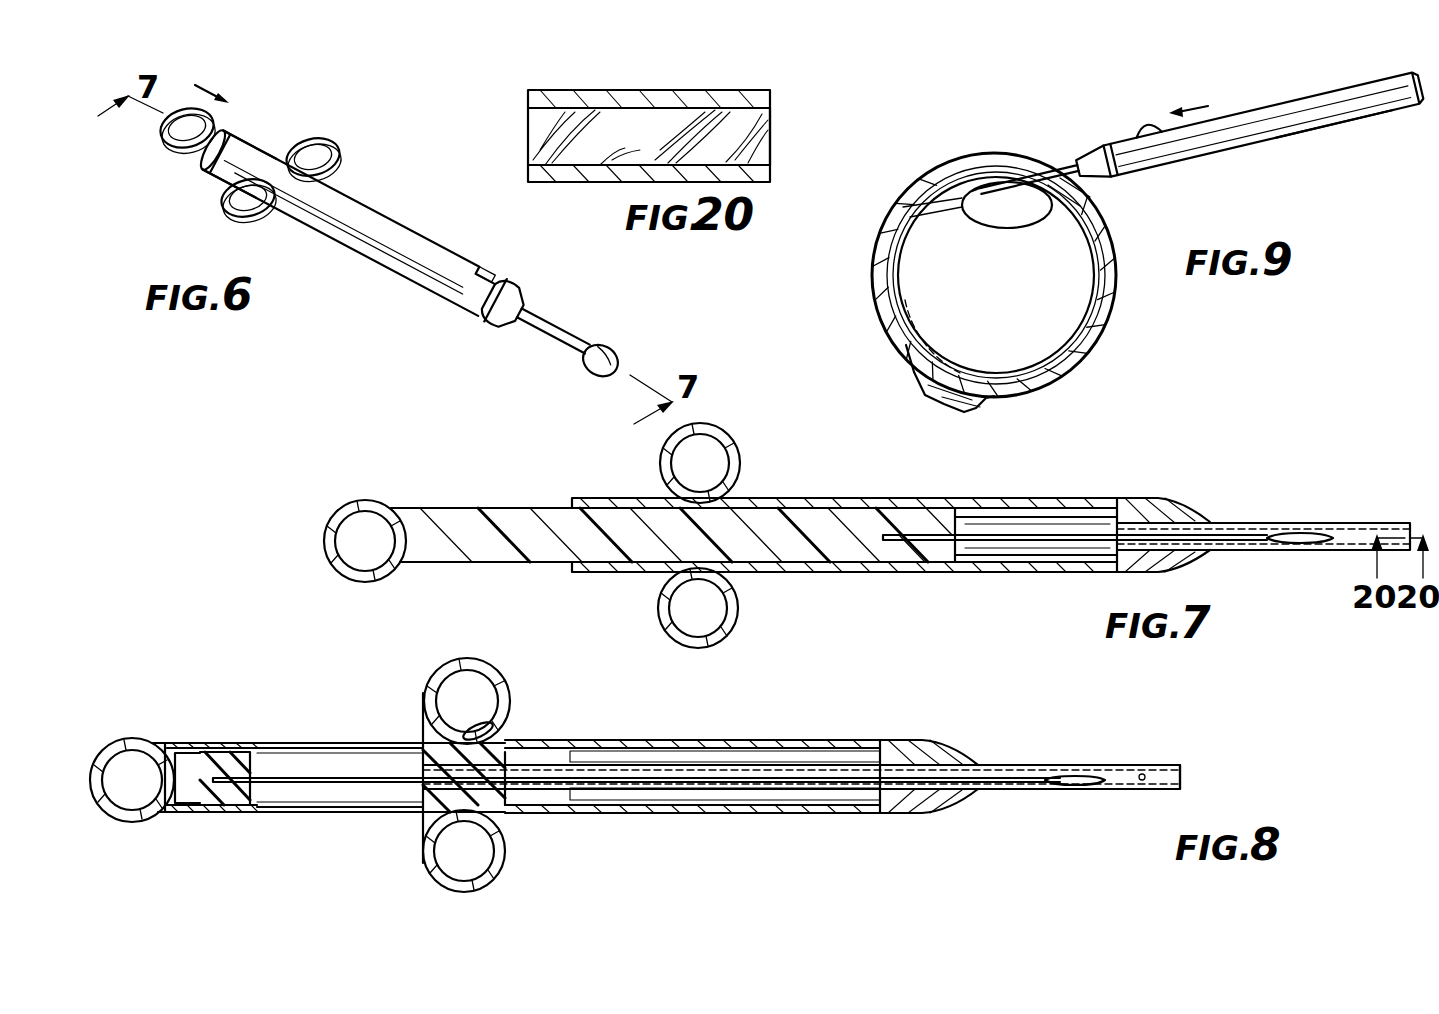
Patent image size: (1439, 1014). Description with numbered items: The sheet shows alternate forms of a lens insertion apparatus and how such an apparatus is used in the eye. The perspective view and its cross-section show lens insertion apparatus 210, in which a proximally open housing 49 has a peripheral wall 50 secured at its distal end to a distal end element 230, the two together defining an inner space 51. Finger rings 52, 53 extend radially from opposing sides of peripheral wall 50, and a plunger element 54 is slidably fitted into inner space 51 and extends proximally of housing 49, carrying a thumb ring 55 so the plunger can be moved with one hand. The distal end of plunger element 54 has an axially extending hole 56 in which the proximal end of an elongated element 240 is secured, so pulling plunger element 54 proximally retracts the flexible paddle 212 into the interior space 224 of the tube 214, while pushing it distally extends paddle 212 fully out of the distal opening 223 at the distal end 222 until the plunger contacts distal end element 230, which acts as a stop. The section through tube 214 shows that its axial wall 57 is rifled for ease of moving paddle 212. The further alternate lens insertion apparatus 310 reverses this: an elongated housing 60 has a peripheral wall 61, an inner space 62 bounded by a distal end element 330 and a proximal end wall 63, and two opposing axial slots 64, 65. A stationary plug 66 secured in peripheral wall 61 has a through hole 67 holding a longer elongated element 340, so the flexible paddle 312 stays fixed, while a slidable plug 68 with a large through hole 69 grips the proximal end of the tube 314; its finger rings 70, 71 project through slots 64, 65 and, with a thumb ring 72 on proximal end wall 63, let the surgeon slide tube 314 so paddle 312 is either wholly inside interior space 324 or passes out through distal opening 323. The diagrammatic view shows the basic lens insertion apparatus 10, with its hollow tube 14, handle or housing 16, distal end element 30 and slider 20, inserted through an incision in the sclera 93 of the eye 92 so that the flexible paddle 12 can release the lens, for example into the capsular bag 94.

In FIG. 9, the lens insertion apparatus 10 is at (1248, 106).
In FIG. 9, the flexible paddle 12 is at (978, 185).
In FIG. 9, the hollow tube 14 is at (1046, 173).
In FIG. 9, the handle or housing 16 is at (1336, 116).
In FIG. 9, the slider 20 is at (1148, 118).
In FIG. 9, the distal end element 30 is at (1086, 158).
In FIG. 6, the housing 49 is at (394, 265).
In FIG. 7, the housing 49 is at (869, 501).
In FIG. 7, the peripheral wall 50 is at (870, 575).
In FIG. 7, the inner space 51 is at (1030, 516).
In FIG. 6, the finger ring 52 is at (367, 122).
In FIG. 7, the finger ring 52 is at (740, 460).
In FIG. 6, the finger ring 53 is at (252, 216).
In FIG. 7, the finger ring 53 is at (738, 622).
In FIG. 6, the plunger element 54 is at (222, 133).
In FIG. 7, the plunger element 54 is at (484, 565).
In FIG. 6, the thumb ring 55 is at (192, 147).
In FIG. 7, the thumb ring 55 is at (395, 508).
In FIG. 7, the axially extending hole 56 is at (905, 532).
In FIG. 20, the axial wall 57 is at (615, 168).
In FIG. 8, the elongated housing 60 is at (725, 708).
In FIG. 8, the peripheral wall 61 is at (624, 815).
In FIG. 8, the inner space 62 is at (382, 772).
In FIG. 8, the proximal end wall 63 is at (186, 812).
In FIG. 8, the slot 64 is at (337, 746).
In FIG. 8, the slot 65 is at (305, 813).
In FIG. 8, the stationary plug 66 is at (218, 750).
In FIG. 8, the through hole 67 is at (212, 806).
In FIG. 8, the slidable plug 68 is at (547, 806).
In FIG. 8, the through hole 69 is at (485, 728).
In FIG. 8, the finger ring 70 is at (526, 660).
In FIG. 8, the finger ring 71 is at (490, 872).
In FIG. 8, the thumb ring 72 is at (153, 748).
In FIG. 9, the eye 92 is at (1120, 321).
In FIG. 9, the sclera 93 is at (918, 181).
In FIG. 9, the capsular bag 94 is at (992, 230).
In FIG. 6, the lens insertion apparatus 210 is at (456, 167).
In FIG. 6, the flexible paddle 212 is at (648, 322).
In FIG. 7, the flexible paddle 212 is at (1300, 534).
In FIG. 6, the tube 214 is at (548, 338).
In FIG. 20, the tube 214 is at (746, 92).
In FIG. 7, the tube 214 is at (1253, 552).
In FIG. 20, the distal end 222 is at (775, 108).
In FIG. 20, the distal opening 223 is at (772, 145).
In FIG. 20, the interior space 224 is at (616, 160).
In FIG. 6, the distal end element 230 is at (516, 290).
In FIG. 7, the distal end element 230 is at (1165, 498).
In FIG. 7, the elongated element 240 is at (1025, 570).
In FIG. 8, the lens insertion apparatus 310 is at (814, 820).
In FIG. 8, the flexible paddle 312 is at (1070, 772).
In FIG. 8, the tube 314 is at (1095, 792).
In FIG. 8, the distal opening 323 is at (1182, 776).
In FIG. 8, the interior space 324 is at (1145, 774).
In FIG. 8, the distal end element 330 is at (928, 740).
In FIG. 8, the elongated element 340 is at (380, 800).